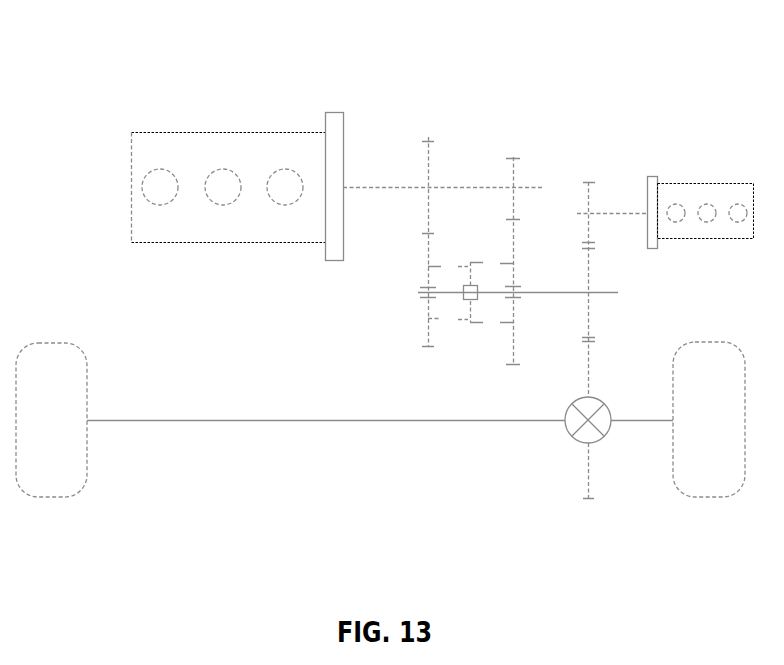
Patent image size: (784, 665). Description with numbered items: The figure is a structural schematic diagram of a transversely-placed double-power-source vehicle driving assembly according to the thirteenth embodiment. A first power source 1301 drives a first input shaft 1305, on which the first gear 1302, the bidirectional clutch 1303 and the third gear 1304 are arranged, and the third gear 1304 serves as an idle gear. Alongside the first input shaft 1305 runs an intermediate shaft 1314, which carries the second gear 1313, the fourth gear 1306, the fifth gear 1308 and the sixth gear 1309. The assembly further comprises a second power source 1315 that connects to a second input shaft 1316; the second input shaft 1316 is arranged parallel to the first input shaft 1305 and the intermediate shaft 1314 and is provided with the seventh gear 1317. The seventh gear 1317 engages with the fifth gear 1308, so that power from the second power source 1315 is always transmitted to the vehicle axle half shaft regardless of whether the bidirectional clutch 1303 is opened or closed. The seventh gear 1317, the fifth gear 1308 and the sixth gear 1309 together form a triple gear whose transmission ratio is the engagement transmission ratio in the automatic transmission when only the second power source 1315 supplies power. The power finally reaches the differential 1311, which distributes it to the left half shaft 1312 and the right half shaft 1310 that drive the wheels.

The first power source 1301 is at (260, 143).
The first gear 1302 is at (428, 138).
The bidirectional clutch 1303 is at (465, 262).
The third gear 1304 is at (513, 157).
The first input shaft 1305 is at (365, 185).
The fourth gear 1306 is at (512, 338).
The fifth gear 1308 is at (590, 283).
The sixth gear 1309 is at (590, 360).
The right half shaft 1310 is at (649, 420).
The differential 1311 is at (586, 432).
The left half shaft 1312 is at (375, 420).
The second gear 1313 is at (428, 338).
The intermediate shaft 1314 is at (420, 293).
The second power source 1315 is at (692, 197).
The second input shaft 1316 is at (625, 212).
The seventh gear 1317 is at (585, 182).